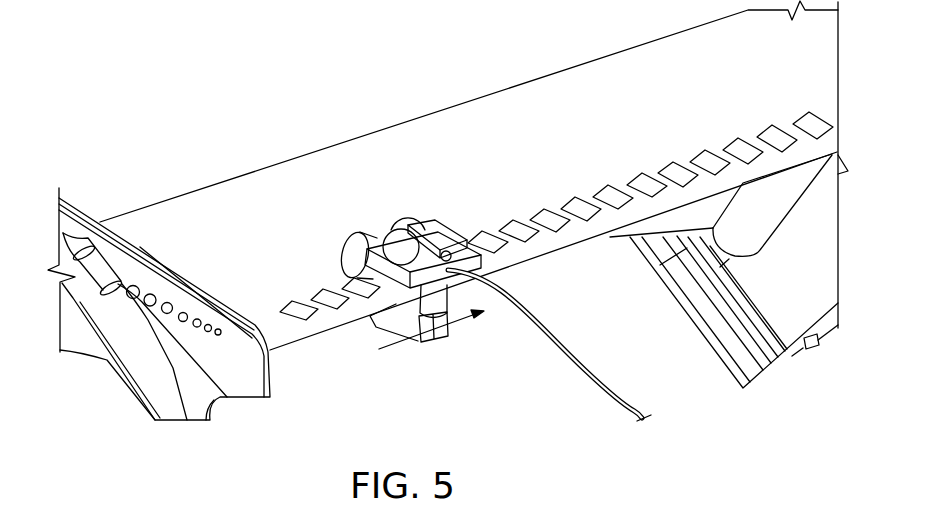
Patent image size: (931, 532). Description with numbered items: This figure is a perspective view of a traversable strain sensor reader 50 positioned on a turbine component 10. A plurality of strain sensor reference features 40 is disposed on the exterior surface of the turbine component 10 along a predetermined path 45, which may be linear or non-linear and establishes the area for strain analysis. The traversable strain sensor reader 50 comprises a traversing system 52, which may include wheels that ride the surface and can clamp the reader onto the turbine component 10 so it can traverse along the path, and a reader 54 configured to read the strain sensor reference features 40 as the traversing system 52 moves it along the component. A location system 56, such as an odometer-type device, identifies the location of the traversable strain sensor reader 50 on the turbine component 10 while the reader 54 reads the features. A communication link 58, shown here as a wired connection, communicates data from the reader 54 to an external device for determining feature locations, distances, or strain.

The turbine component 10 is at (146, 76).
The strain sensor reference features 40 is at (614, 236).
The predetermined path 45 is at (463, 325).
The traversable strain sensor reader 50 is at (492, 257).
The traversing system 52 is at (350, 233).
The reader 54 is at (440, 220).
The location system 56 is at (390, 227).
The communication link 58 is at (553, 352).